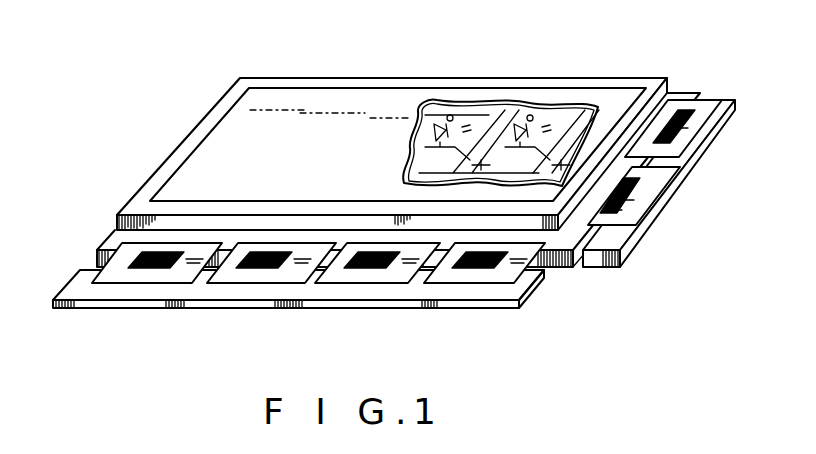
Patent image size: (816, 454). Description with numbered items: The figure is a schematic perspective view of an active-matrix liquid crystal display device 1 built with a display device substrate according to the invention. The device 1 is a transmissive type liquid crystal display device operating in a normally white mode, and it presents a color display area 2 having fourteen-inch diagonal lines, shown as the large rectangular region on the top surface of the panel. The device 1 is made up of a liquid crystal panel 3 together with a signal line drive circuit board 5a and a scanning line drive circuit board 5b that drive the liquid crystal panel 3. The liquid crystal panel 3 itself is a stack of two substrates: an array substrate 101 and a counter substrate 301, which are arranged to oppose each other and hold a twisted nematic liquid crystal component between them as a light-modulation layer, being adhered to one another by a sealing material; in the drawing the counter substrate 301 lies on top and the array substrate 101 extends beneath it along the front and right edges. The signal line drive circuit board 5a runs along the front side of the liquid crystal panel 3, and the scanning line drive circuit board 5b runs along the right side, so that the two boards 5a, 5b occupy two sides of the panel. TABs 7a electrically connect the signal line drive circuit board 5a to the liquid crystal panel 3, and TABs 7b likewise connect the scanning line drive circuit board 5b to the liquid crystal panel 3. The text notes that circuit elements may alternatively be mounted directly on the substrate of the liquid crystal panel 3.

The active-matrix liquid crystal display device 1 is at (394, 176).
The display area 2 is at (349, 93).
The liquid crystal panel 3 is at (371, 145).
The counter substrate 301 is at (166, 160).
The array substrate 101 is at (107, 243).
The signal line drive circuit board 5a is at (537, 282).
The scanning line drive circuit board 5b is at (606, 240).
The TAB 7a is at (157, 276).
The TAB 7b is at (692, 127).